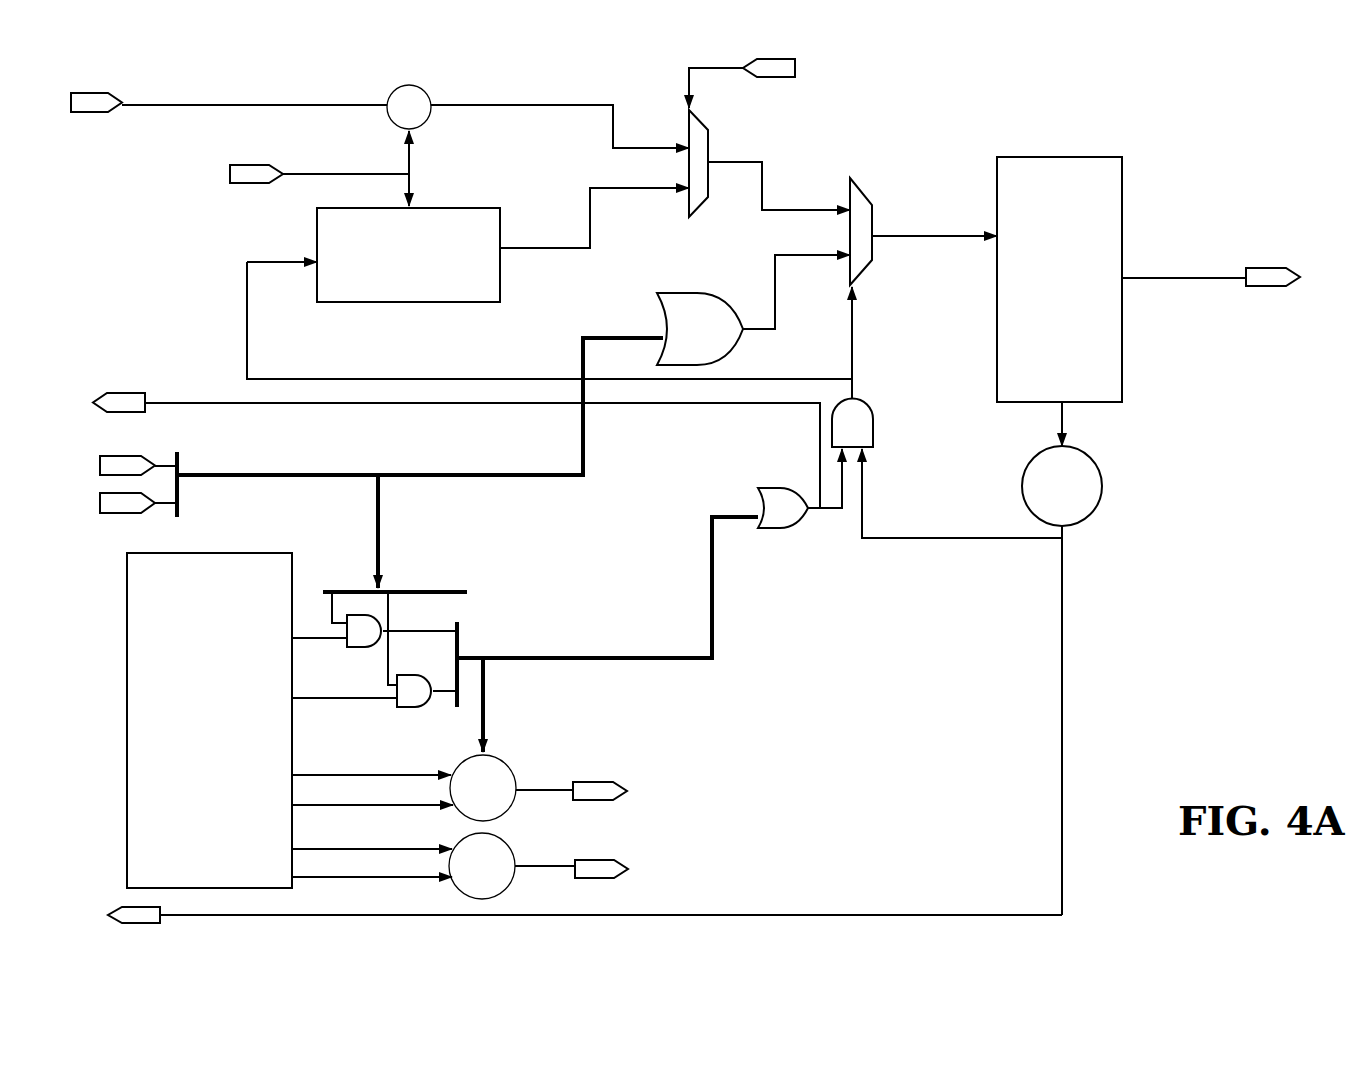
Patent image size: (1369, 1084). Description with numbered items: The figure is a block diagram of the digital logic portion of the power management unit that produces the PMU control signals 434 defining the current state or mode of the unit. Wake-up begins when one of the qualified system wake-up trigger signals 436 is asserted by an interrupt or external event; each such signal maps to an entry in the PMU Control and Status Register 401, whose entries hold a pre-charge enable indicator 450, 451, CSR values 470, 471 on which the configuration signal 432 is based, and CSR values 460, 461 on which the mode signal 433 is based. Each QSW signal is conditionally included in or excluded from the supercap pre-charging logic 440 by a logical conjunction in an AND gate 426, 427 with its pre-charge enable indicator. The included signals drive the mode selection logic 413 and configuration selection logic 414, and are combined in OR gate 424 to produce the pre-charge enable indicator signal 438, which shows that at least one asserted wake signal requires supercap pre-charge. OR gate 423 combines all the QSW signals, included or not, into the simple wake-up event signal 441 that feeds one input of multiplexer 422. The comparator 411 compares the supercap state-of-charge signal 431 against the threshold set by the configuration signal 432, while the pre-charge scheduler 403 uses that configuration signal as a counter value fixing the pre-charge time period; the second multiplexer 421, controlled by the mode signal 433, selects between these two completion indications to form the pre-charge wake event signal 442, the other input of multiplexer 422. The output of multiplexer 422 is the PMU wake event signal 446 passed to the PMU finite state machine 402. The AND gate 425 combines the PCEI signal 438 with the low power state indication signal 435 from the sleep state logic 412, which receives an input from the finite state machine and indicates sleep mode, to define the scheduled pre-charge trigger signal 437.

The PMU Control and Status Register 401 is at (213, 553).
The PMU finite state machine 402 is at (1085, 157).
The pre-charge scheduler 403 is at (455, 208).
The comparator 411 is at (427, 92).
The sleep state logic 412 is at (1025, 470).
The mode selection logic 413 is at (503, 757).
The configuration selection logic 414 is at (503, 888).
The second multiplexer 421 is at (710, 148).
The multiplexer 422 is at (862, 177).
The OR gate 423 is at (680, 292).
The OR gate 424 is at (770, 530).
The AND gate 425 is at (870, 402).
The AND gate 426 is at (370, 648).
The AND gate 427 is at (428, 708).
The supercap state-of-charge signal 431 is at (87, 113).
The configuration signal 432 is at (253, 184).
The mode signal 433 is at (800, 63).
The PMU control signals 434 is at (1258, 290).
The low power state indication signal 435 is at (165, 917).
The qualified system wake-up trigger signals 436 is at (188, 473).
The scheduled pre-charge trigger signal 437 is at (352, 377).
The pre-charge enable indicator signal 438 is at (667, 403).
The supercap pre-charging logic 440 is at (713, 620).
The simple wake-up event signal 441 is at (800, 252).
The pre-charge wake event signal 442 is at (765, 173).
The PMU wake event signal 446 is at (900, 232).
The pre-charge enable indicator 450 is at (320, 637).
The pre-charge enable indicator 451 is at (358, 702).
The CSR value 460 is at (317, 772).
The CSR value 461 is at (328, 803).
The CSR value 470 is at (323, 849).
The CSR value 471 is at (325, 877).